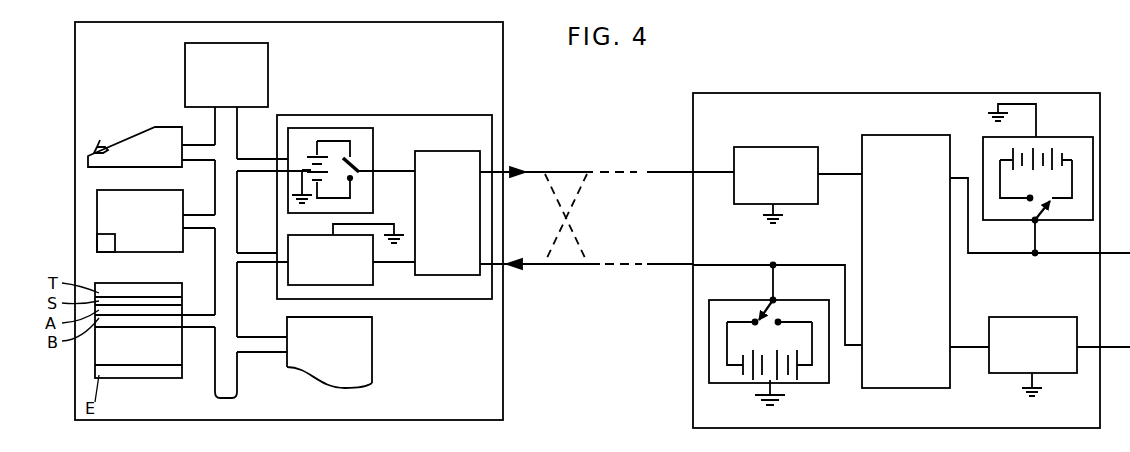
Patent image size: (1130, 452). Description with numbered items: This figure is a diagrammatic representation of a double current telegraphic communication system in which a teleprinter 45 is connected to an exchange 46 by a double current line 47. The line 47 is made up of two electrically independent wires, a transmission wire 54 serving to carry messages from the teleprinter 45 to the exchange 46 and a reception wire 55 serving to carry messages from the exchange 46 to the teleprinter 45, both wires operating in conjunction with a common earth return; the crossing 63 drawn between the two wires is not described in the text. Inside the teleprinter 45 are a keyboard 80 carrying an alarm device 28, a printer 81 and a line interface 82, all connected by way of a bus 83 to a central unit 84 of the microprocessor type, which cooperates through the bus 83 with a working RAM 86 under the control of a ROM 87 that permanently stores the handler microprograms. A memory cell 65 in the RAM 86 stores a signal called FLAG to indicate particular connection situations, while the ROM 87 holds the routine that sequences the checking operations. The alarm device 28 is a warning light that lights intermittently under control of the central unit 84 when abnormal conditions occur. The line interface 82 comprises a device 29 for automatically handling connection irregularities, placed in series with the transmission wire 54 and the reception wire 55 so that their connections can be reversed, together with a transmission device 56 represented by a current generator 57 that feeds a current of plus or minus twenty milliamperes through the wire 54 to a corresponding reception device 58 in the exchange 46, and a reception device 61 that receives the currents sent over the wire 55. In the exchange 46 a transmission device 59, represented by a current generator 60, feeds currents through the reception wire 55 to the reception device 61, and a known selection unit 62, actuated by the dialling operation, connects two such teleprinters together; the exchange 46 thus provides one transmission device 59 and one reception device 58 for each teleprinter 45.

The alarm device 28 is at (99, 142).
The device for automatically handling connection irregularities 29 is at (455, 275).
The teleprinter 45 is at (503, 355).
The exchange 46 is at (693, 380).
The double current line 47 is at (560, 270).
The transmission wire 54 is at (526, 171).
The reception wire 55 is at (520, 266).
The transmission device 56 is at (368, 128).
The current generator 57 is at (314, 143).
The reception device 58 is at (783, 147).
The transmission device 59 is at (1063, 222).
The current generator 60 is at (1072, 137).
The reception device 61 is at (365, 278).
The selection unit 62 is at (912, 388).
The crossed connection 63 is at (576, 222).
The memory cell 65 is at (106, 250).
The keyboard 80 is at (164, 137).
The printer 81 is at (362, 368).
The line interface 82 is at (410, 118).
The bus 83 is at (237, 291).
The central unit 84 is at (268, 62).
The working RAM 86 is at (176, 246).
The ROM 87 is at (176, 355).